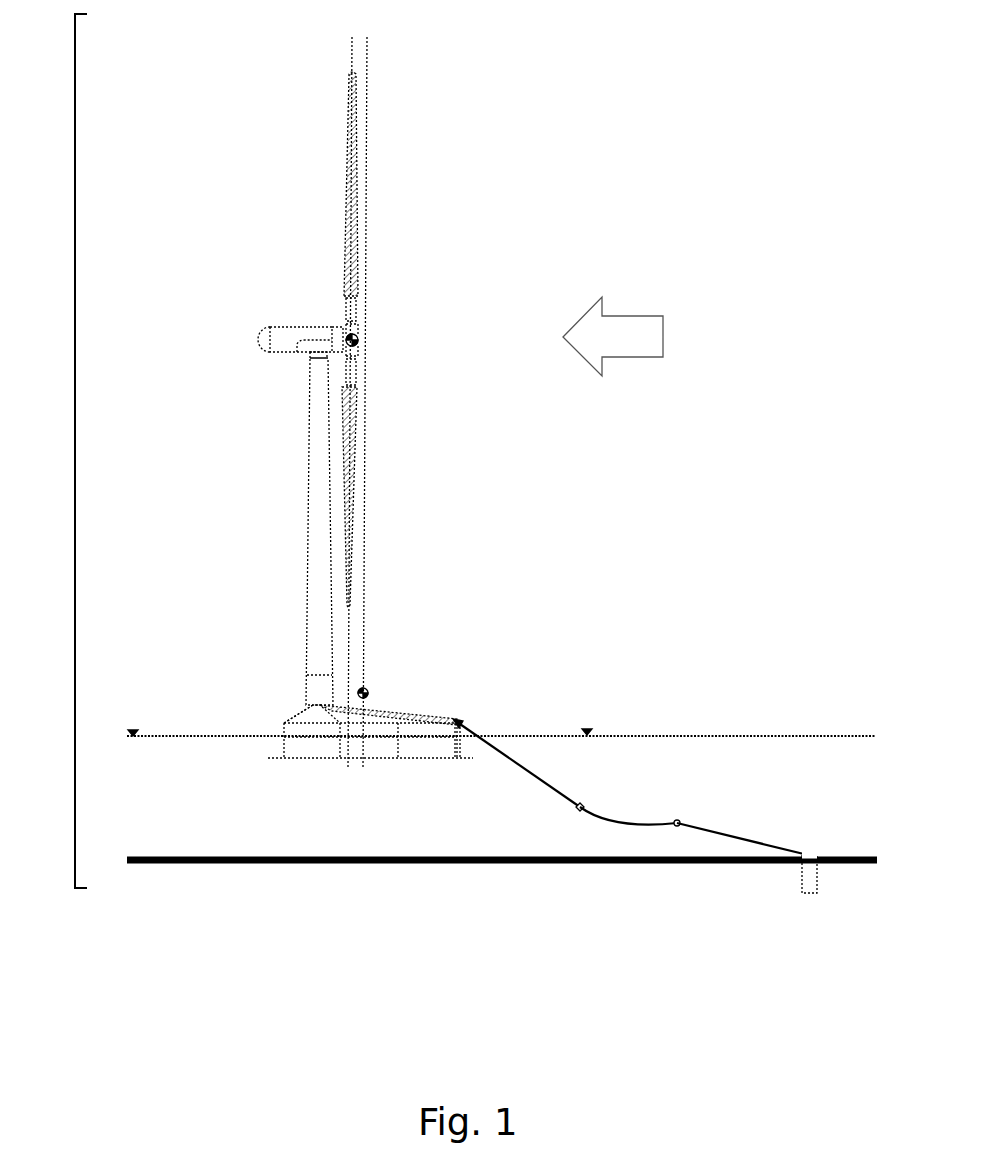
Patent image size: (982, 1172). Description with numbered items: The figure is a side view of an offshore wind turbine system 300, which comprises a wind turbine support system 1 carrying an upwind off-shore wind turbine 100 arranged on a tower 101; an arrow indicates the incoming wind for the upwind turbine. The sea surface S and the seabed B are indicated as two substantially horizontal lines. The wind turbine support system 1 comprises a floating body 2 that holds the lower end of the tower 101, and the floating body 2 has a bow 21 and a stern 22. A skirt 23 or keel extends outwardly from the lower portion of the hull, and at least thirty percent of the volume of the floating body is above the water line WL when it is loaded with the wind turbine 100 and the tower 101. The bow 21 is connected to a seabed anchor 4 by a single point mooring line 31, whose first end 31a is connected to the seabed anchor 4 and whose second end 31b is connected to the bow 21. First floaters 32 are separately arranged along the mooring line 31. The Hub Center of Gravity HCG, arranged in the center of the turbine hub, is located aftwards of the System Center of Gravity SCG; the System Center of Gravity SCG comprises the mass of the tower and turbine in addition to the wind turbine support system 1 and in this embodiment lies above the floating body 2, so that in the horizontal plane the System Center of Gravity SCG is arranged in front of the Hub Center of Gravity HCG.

The offshore wind turbine system 300 is at (75, 450).
The upwind off-shore wind turbine 100 is at (305, 322).
The tower 101 is at (302, 498).
The Hub Center of Gravity HCG is at (357, 333).
The System Center of Gravity SCG is at (365, 685).
The wind turbine support system 1 is at (365, 708).
The floating body 2 is at (388, 712).
The bow 21 is at (450, 717).
The stern 22 is at (285, 712).
The skirt 23 is at (467, 760).
The mooring line 31 is at (600, 810).
The first end of mooring line 31a is at (467, 733).
The second end of mooring line 31b is at (748, 840).
The first floaters 32 is at (580, 807).
The seabed anchor 4 is at (817, 892).
The sea surface S is at (494, 728).
The seabed B is at (493, 849).
The water line WL is at (313, 737).